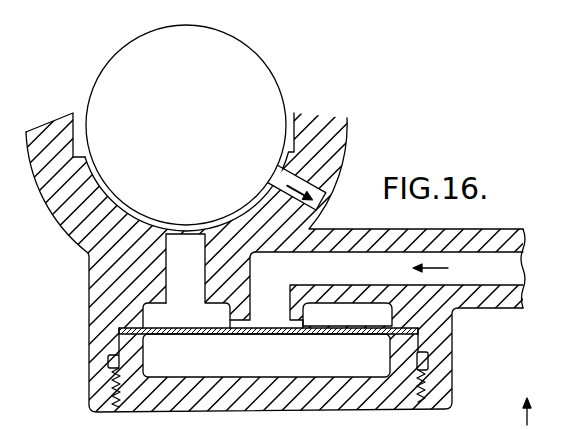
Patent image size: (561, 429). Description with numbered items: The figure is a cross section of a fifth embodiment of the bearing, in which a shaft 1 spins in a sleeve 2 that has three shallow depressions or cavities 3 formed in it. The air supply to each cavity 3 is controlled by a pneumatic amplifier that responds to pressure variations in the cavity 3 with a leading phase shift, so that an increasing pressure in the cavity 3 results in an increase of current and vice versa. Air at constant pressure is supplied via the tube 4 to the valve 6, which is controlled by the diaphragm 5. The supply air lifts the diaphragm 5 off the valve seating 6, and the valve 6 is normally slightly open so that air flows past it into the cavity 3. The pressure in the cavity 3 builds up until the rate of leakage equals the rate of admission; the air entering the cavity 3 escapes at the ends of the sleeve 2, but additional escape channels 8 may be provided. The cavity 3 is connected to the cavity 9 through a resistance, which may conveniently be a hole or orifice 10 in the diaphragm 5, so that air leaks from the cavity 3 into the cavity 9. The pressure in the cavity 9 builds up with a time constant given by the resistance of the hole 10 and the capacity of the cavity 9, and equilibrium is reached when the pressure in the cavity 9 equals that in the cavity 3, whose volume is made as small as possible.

The shaft 1 is at (240, 150).
The sleeve 2 is at (280, 163).
The cavity 3 is at (189, 228).
The tube 4 is at (321, 272).
The diaphragm 5 is at (352, 336).
The valve 6 is at (303, 326).
The escape channel 8 is at (305, 195).
The cavity 9 is at (312, 352).
The hole 10 is at (268, 367).